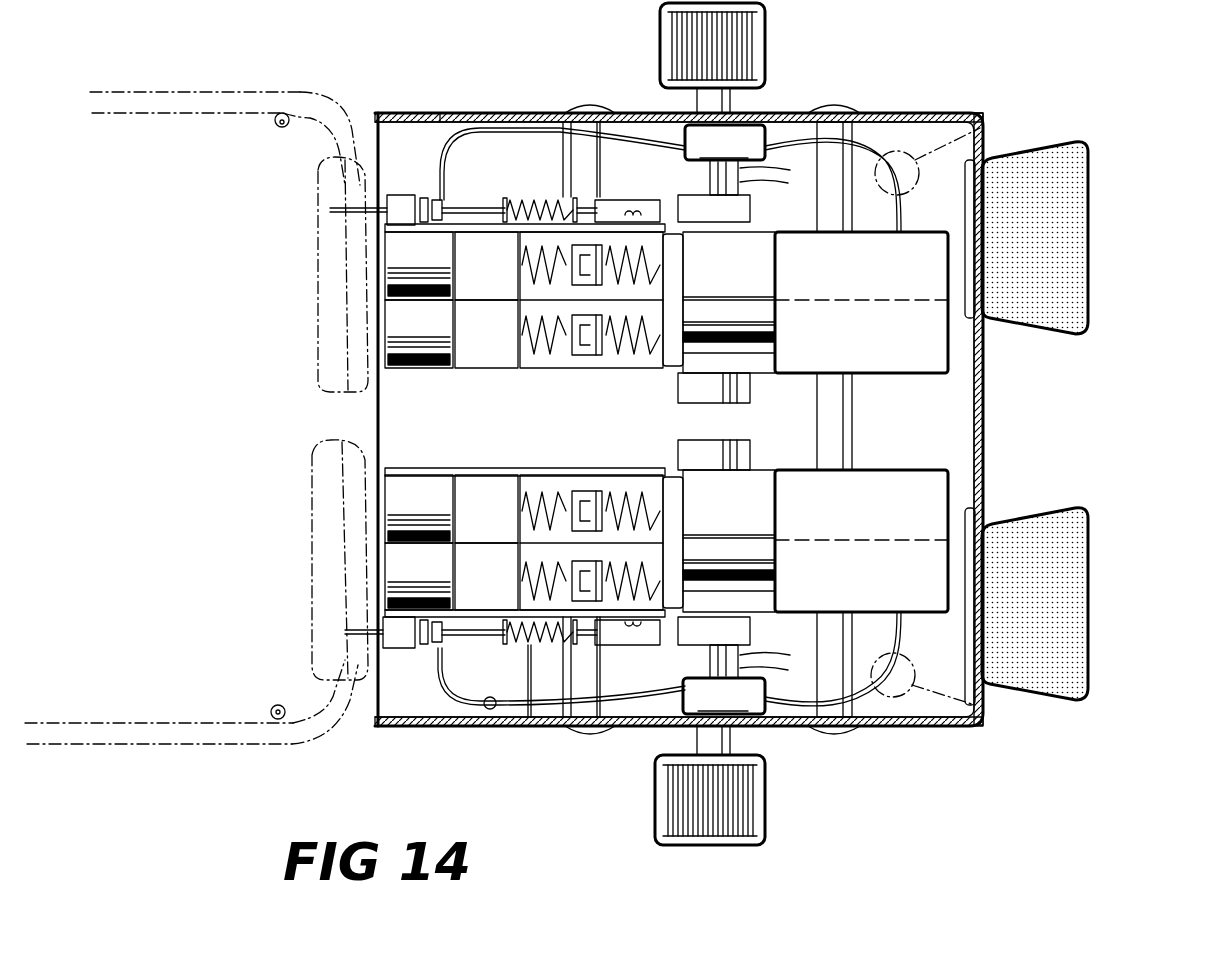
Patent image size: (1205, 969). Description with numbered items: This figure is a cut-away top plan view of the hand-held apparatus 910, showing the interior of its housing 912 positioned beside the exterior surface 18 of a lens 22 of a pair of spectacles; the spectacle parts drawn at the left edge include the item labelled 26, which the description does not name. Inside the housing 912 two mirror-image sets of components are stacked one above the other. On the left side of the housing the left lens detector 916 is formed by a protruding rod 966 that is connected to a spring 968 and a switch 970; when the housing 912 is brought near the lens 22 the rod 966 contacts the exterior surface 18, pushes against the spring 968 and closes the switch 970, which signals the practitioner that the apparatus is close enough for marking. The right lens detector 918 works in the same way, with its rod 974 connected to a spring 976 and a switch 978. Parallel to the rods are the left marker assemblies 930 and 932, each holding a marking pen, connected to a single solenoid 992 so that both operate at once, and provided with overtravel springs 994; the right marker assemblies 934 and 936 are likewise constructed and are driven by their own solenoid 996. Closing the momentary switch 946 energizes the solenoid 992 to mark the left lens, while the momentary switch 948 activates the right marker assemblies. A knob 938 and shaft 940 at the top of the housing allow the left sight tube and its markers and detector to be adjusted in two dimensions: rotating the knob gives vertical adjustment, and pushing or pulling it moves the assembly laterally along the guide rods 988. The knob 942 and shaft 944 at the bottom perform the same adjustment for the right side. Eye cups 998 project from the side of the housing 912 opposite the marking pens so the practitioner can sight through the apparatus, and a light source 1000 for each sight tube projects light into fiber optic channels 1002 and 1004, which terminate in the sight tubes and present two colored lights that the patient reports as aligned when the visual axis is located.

The tube 26 is at (190, 92).
The exterior surface 18 is at (358, 148).
The lens 22 is at (330, 305).
The apparatus 910 is at (1095, 28).
The housing 912 is at (446, 112).
The lens detector 916 is at (400, 195).
The lens detector 918 is at (393, 650).
The left marker assembly 930 is at (400, 252).
The left marker assembly 932 is at (400, 325).
The right marker assembly 934 is at (400, 552).
The right marker assembly 936 is at (405, 490).
The knob 938 is at (766, 40).
The shaft 940 is at (732, 102).
The knob 942 is at (708, 845).
The shaft 944 is at (732, 740).
The momentary switch 946 is at (980, 128).
The momentary switch 948 is at (975, 705).
The rod 966 is at (400, 206).
The spring 968 is at (535, 200).
The switch 970 is at (612, 205).
The rod 974 is at (355, 630).
The spring 976 is at (520, 648).
The switch 978 is at (610, 648).
The guide rods 988 is at (585, 108).
The solenoid 992 is at (890, 347).
The overtravel springs 994 is at (660, 275).
The solenoid 996 is at (883, 520).
The eye cups 998 is at (1065, 212).
The light source 1000 is at (736, 419).
The fiber optic channel 1002 is at (883, 152).
The fiber optic channel 1004 is at (560, 115).